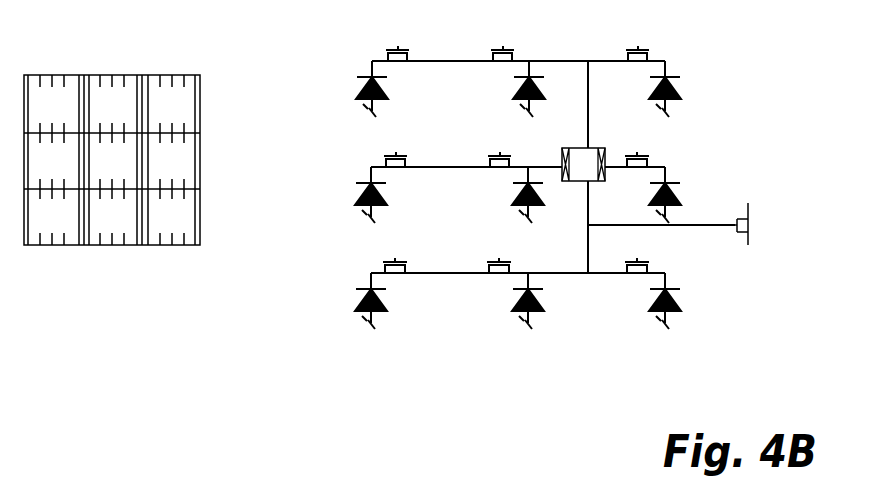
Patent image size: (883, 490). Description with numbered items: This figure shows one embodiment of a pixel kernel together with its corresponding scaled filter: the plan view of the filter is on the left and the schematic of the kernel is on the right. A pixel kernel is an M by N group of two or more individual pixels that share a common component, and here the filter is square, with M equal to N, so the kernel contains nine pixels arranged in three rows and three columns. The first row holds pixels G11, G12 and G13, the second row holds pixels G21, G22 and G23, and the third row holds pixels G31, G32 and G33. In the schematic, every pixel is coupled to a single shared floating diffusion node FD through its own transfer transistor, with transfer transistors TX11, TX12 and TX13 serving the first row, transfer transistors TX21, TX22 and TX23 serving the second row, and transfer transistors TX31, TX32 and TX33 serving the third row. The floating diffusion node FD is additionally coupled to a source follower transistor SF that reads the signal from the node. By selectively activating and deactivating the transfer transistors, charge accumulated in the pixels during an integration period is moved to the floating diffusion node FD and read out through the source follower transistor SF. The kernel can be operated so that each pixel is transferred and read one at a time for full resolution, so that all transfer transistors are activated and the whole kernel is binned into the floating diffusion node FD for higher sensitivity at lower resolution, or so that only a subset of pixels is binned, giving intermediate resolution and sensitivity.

The pixel G11 is at (51, 106).
The pixel G12 is at (110, 106).
The pixel G13 is at (170, 106).
The pixel G21 is at (51, 163).
The pixel G22 is at (110, 163).
The pixel G23 is at (170, 163).
The pixel G31 is at (51, 219).
The pixel G32 is at (110, 219).
The pixel G33 is at (170, 219).
The transfer transistor TX11 is at (390, 70).
The transfer transistor TX12 is at (510, 70).
The transfer transistor TX13 is at (645, 70).
The transfer transistor TX21 is at (388, 176).
The transfer transistor TX22 is at (508, 176).
The transfer transistor TX23 is at (645, 176).
The transfer transistor TX31 is at (388, 282).
The transfer transistor TX32 is at (508, 282).
The transfer transistor TX33 is at (645, 282).
The floating diffusion node FD is at (583, 164).
The source follower transistor SF is at (756, 224).